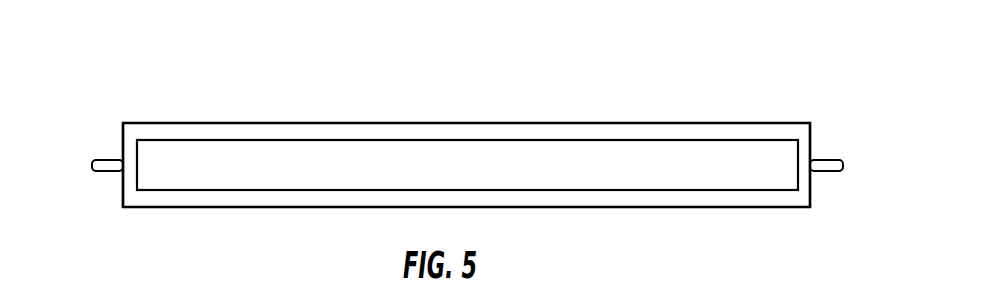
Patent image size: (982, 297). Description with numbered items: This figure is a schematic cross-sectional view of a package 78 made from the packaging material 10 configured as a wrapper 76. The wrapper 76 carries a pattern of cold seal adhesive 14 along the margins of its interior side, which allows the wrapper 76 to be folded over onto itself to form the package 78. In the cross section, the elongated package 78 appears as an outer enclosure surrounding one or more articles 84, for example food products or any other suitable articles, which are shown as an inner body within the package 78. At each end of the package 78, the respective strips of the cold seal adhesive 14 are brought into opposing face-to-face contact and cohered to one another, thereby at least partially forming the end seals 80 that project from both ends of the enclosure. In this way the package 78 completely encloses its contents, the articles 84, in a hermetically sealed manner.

The packaging material 10 is at (268, 123).
The cold seal adhesive 14 is at (92, 166).
The wrapper 76 is at (466, 165).
The package 78 is at (466, 165).
The end seals 80 is at (108, 138).
The articles 84 is at (472, 158).